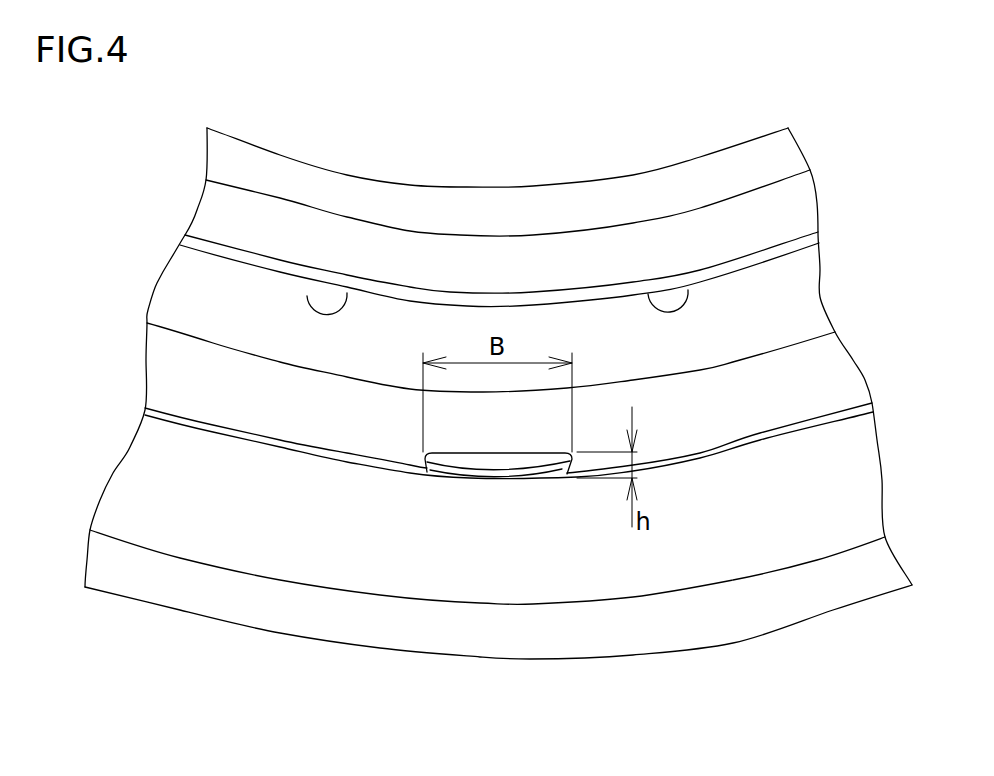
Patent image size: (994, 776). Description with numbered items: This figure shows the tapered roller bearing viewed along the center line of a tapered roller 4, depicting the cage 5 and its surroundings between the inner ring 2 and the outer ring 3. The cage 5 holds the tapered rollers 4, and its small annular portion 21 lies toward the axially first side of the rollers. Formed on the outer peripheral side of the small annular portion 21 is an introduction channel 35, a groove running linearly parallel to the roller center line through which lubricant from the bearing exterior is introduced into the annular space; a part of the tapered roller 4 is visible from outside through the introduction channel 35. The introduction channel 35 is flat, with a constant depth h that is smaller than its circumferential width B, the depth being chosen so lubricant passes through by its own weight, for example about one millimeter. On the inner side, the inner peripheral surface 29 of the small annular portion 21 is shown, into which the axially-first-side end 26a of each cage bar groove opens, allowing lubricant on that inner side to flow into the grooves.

The inner ring 2 is at (487, 258).
The outer ring 3 is at (488, 580).
The tapered roller 4 is at (460, 467).
The cage 5 is at (387, 470).
The small annular portion 21 is at (682, 433).
The axially-first-side end of the groove 26a is at (327, 305).
The inner peripheral surface of the small annular portion 29 is at (598, 325).
The introduction channel 35 is at (500, 452).